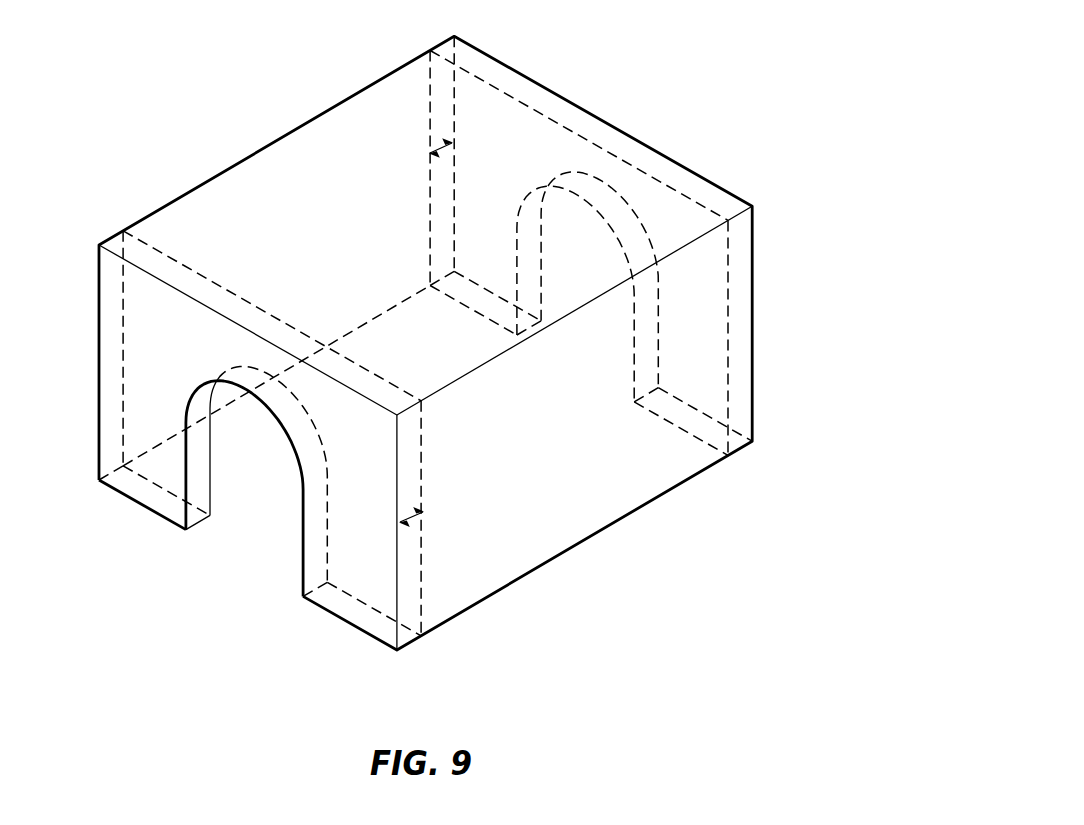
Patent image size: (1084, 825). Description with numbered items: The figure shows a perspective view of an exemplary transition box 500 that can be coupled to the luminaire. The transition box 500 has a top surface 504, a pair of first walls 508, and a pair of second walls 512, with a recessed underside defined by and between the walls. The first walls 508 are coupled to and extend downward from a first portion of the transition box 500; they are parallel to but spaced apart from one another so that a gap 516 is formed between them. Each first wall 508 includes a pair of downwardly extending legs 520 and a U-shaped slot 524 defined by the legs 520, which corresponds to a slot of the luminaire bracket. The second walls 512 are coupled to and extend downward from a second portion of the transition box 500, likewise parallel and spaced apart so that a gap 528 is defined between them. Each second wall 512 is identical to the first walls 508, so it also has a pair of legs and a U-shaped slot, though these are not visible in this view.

The transition box 500 is at (684, 48).
The top surface 504 is at (212, 200).
The first walls 508 is at (123, 348).
The second walls 512 is at (756, 318).
The gap 516 is at (410, 522).
The legs 520 is at (357, 570).
The U-shaped slot 524 is at (300, 533).
The gap 528 is at (437, 147).